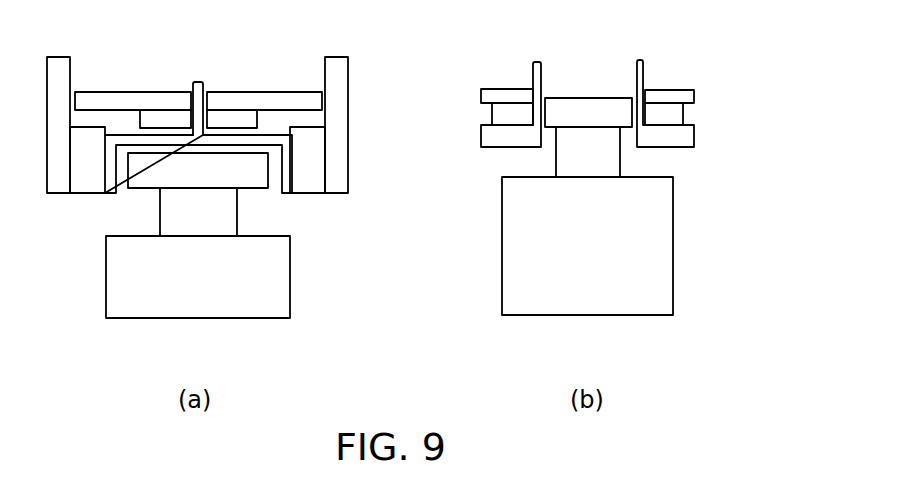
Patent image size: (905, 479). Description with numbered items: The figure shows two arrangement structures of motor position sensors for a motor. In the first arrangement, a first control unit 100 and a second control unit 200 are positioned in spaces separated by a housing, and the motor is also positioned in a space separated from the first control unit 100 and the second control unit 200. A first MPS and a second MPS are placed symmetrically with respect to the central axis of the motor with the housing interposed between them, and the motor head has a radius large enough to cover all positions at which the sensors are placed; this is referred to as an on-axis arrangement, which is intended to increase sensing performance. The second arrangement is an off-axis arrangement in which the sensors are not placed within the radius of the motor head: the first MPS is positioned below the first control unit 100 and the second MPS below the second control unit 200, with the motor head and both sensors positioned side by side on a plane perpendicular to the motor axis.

The first control unit 100 is at (101, 100).
The second control unit 200 is at (295, 100).